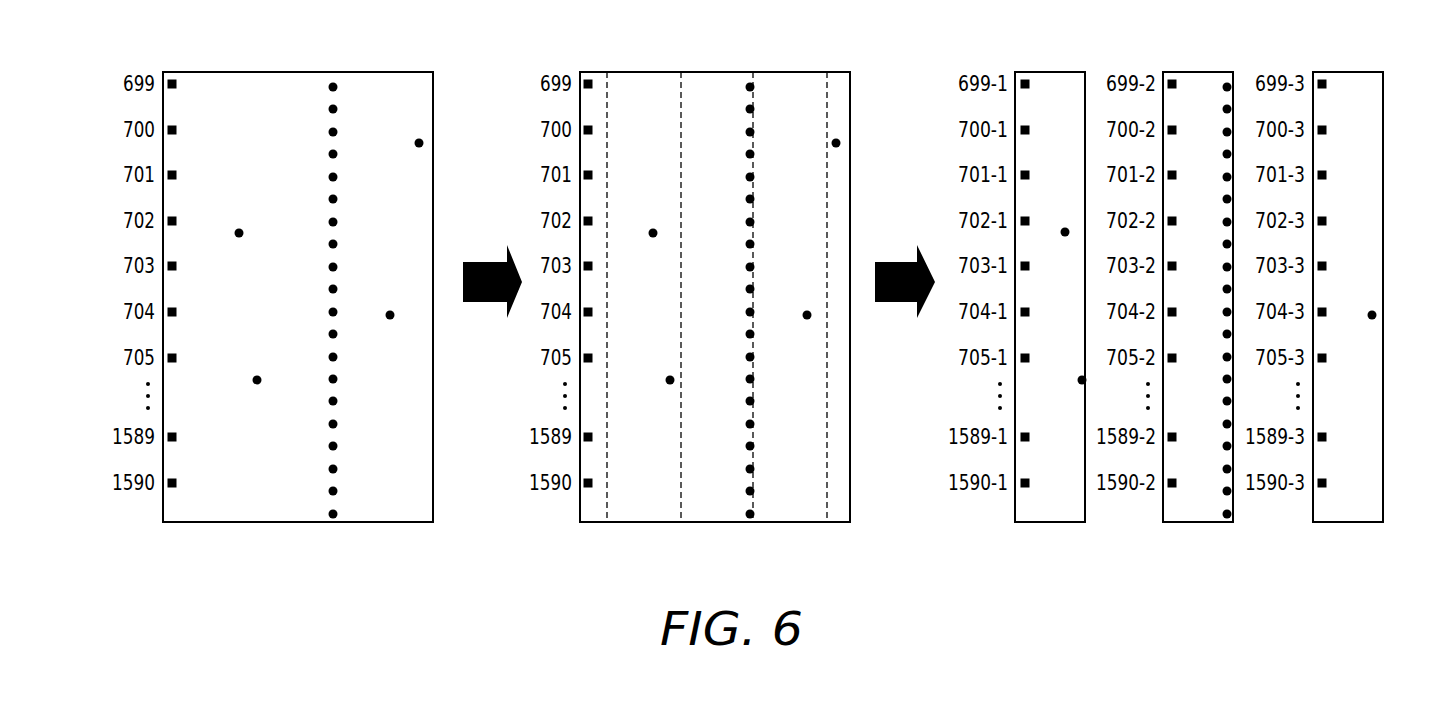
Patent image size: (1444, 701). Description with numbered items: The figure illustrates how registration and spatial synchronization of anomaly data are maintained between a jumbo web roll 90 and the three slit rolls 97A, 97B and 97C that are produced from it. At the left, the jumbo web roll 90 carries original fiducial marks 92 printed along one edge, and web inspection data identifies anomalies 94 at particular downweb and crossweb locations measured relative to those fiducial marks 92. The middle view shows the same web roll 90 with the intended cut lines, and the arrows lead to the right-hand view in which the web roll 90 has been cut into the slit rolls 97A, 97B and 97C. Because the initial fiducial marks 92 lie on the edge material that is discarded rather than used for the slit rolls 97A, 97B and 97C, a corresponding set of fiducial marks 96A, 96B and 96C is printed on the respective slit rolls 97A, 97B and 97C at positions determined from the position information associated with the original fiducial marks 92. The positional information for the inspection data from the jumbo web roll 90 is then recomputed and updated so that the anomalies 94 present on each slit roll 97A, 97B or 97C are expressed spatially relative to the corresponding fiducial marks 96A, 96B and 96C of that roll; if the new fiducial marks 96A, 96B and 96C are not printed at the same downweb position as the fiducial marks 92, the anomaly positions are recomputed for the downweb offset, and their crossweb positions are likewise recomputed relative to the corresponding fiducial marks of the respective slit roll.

The jumbo web roll 90 is at (383, 72).
The original fiducial marks 92 is at (173, 489).
The anomalies 94 is at (257, 377).
The fiducial marks 96A is at (1026, 489).
The fiducial marks 96B is at (1173, 489).
The fiducial marks 96C is at (1323, 489).
The slit roll 97A is at (1063, 72).
The slit roll 97B is at (1200, 72).
The slit roll 97C is at (1358, 72).